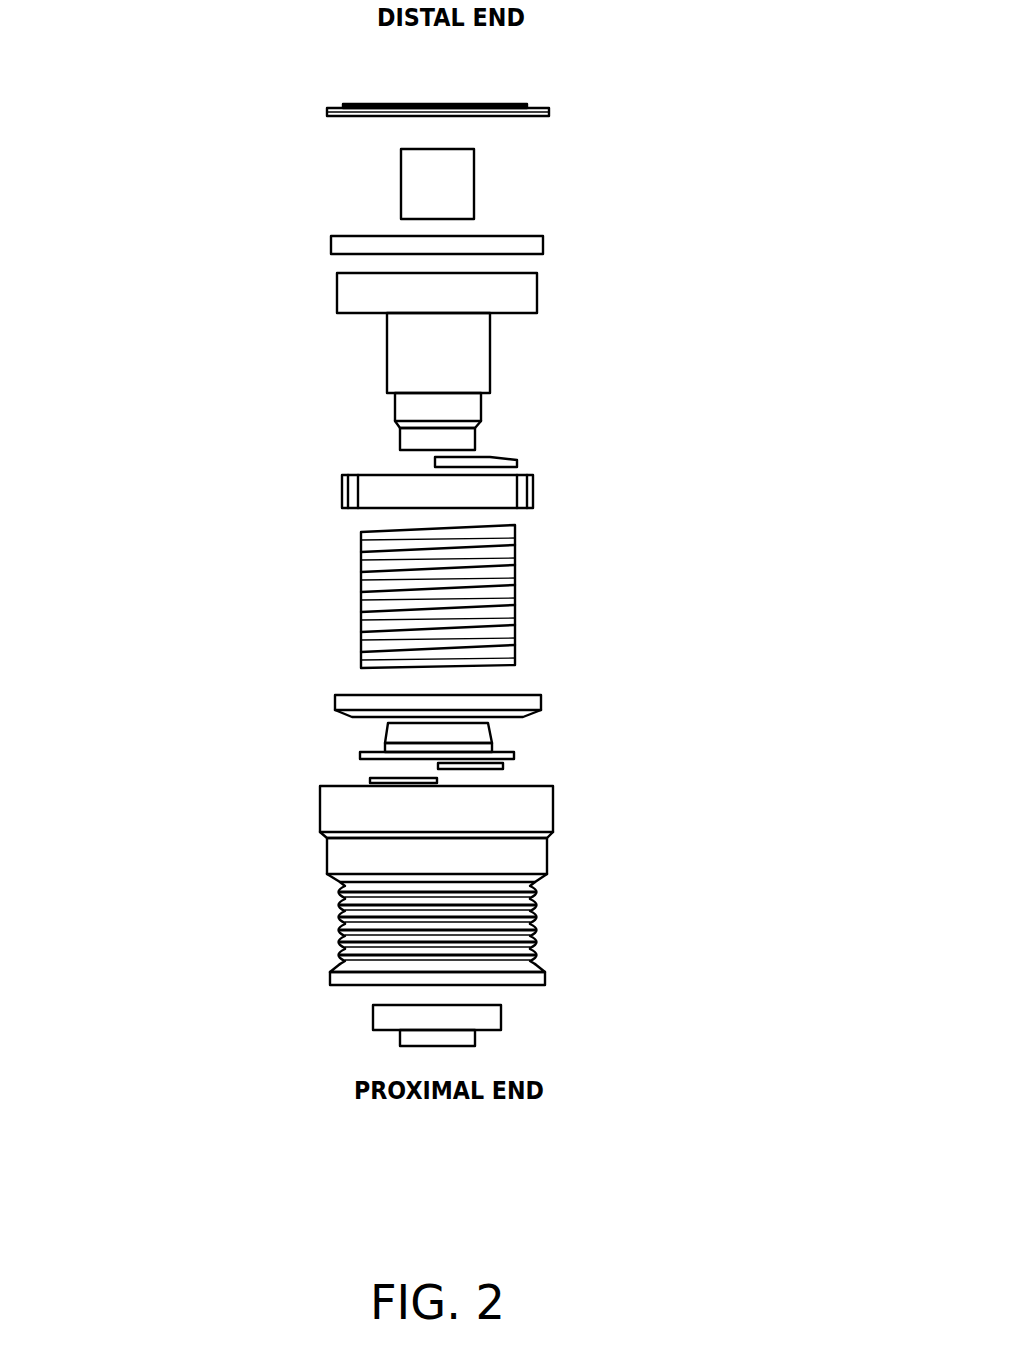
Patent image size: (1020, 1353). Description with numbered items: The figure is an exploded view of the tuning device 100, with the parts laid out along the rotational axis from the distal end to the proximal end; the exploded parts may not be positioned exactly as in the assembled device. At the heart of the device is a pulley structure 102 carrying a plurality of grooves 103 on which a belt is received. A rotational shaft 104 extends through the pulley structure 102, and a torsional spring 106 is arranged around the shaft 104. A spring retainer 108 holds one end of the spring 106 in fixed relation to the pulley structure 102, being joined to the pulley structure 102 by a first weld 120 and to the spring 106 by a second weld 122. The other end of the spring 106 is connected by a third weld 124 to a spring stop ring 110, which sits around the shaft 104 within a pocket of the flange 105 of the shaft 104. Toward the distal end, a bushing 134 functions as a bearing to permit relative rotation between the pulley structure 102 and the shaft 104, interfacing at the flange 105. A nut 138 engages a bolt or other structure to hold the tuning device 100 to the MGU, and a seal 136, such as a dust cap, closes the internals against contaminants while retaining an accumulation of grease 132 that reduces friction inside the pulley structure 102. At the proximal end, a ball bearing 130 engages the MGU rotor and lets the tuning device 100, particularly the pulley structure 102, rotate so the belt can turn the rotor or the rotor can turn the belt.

The tuning device 100 is at (195, 107).
The pulley structure 102 is at (570, 867).
The grooves 103 is at (545, 947).
The rotational shaft 104 is at (513, 338).
The flange 105 is at (537, 292).
The torsional spring 106 is at (515, 615).
The spring retainer 108 is at (492, 737).
The spring stop ring 110 is at (533, 497).
The first weld 120 is at (372, 779).
The second weld 122 is at (503, 766).
The third weld 124 is at (500, 459).
The ball bearing 130 is at (373, 1013).
The grease 132 is at (335, 703).
The bushing 134 is at (331, 245).
The seal 136 is at (527, 103).
The nut 138 is at (474, 183).